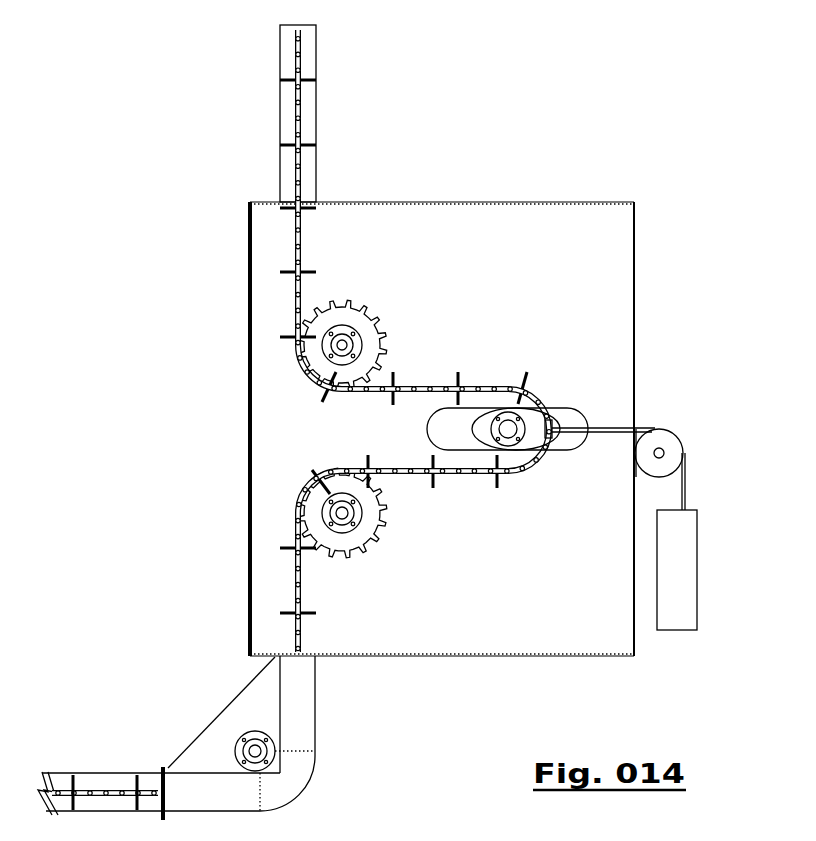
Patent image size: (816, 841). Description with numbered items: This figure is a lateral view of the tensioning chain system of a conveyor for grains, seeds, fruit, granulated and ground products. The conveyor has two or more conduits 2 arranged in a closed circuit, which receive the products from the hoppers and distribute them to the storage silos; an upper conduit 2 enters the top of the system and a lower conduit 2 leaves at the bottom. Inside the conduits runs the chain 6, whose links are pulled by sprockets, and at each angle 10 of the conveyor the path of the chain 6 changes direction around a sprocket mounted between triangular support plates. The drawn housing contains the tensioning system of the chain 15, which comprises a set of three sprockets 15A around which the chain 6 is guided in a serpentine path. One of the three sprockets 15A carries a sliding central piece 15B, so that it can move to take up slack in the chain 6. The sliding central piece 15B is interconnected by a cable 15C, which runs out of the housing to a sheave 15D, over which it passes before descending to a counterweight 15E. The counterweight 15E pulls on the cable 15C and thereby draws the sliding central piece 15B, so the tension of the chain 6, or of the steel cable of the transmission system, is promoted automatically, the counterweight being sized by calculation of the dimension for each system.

The conduit 2 is at (329, 113).
The chain 6 is at (294, 252).
The angle 10 is at (303, 780).
The tensioning system of the chain 15 is at (588, 298).
The sprockets 15A is at (308, 515).
The sliding central piece 15B is at (533, 420).
The cable 15C is at (610, 429).
The sheave 15D is at (665, 448).
The counterweight 15E is at (661, 579).